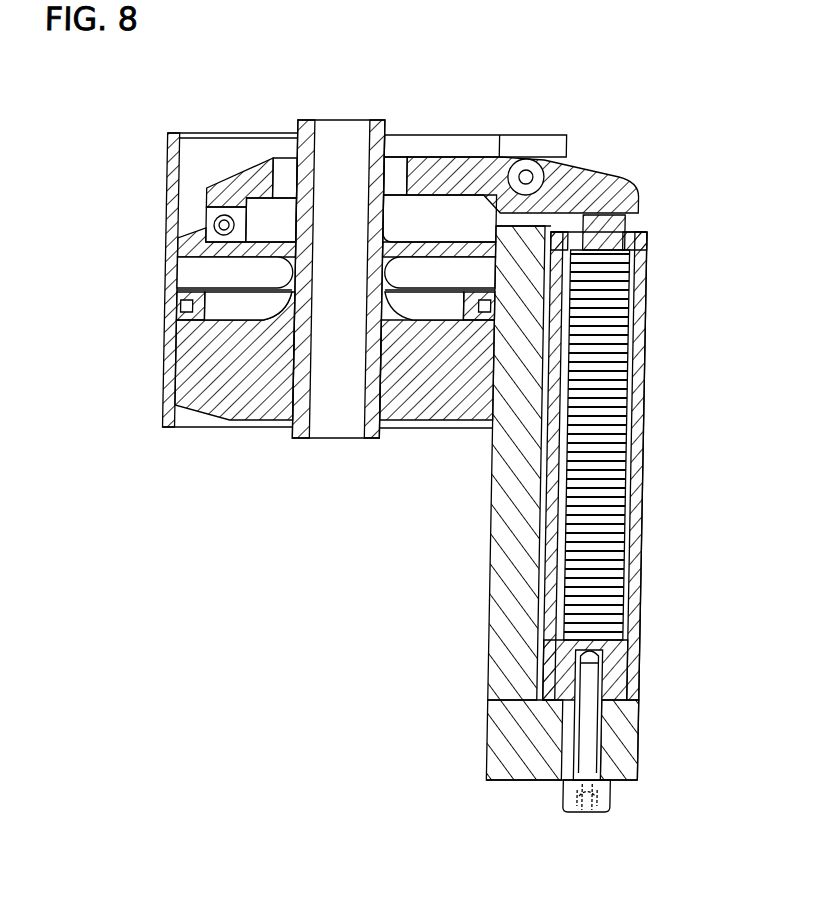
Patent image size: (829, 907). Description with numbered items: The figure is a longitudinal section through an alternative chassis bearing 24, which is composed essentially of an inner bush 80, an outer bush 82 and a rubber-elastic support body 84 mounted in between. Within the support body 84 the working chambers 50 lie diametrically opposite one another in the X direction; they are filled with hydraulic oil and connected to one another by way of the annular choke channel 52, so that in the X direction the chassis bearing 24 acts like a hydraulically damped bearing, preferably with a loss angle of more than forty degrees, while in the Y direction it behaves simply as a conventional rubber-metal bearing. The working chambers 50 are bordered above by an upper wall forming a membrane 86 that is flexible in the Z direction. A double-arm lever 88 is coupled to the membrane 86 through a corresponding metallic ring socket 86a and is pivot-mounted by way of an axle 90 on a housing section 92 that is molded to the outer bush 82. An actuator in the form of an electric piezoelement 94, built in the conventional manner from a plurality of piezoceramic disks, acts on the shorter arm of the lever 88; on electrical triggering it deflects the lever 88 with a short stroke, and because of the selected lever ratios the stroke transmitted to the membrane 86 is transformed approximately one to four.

The chassis bearing 24 is at (266, 543).
The working chambers 50 is at (200, 268).
The annular choke channel 52 is at (488, 313).
The inner bush 80 is at (381, 124).
The outer bush 82 is at (167, 323).
The rubber-elastic support body 84 is at (475, 372).
The membrane 86 is at (260, 228).
The metallic ring socket 86a is at (200, 233).
The double-arm lever 88 is at (612, 203).
The axle 90 is at (520, 170).
The housing section 92 is at (490, 497).
The piezoelement 94 is at (600, 388).